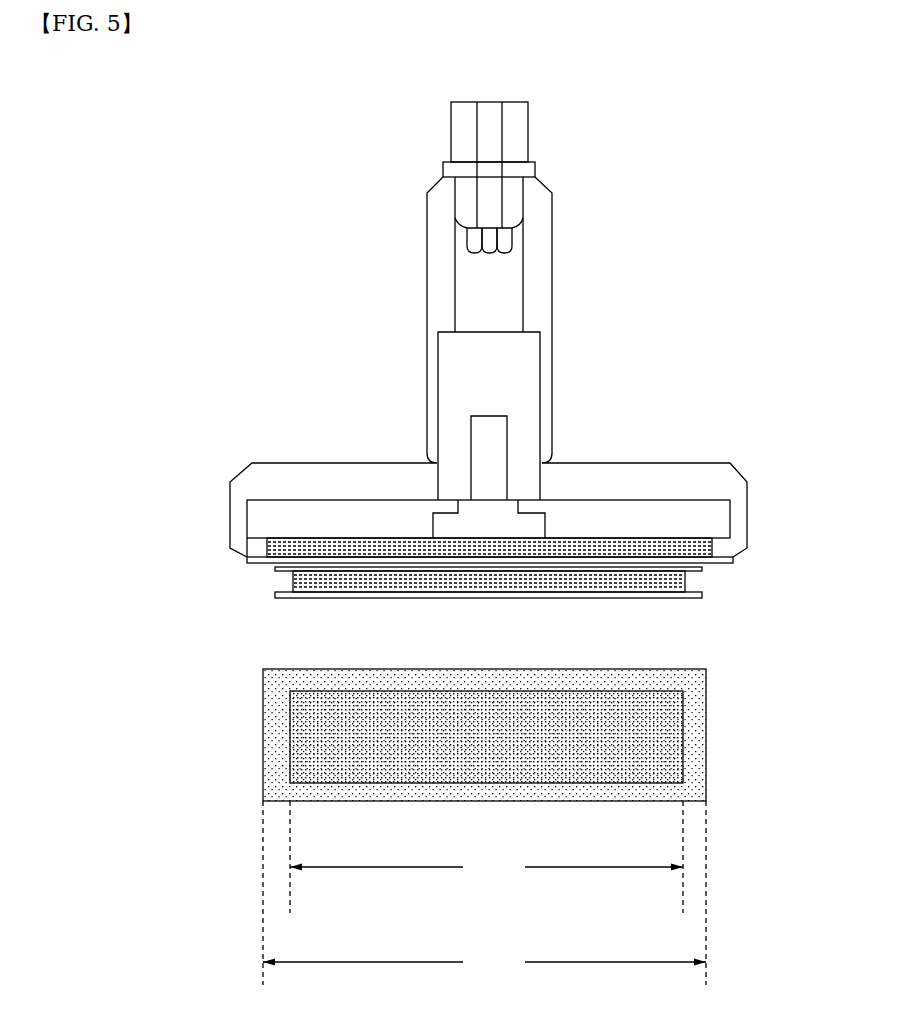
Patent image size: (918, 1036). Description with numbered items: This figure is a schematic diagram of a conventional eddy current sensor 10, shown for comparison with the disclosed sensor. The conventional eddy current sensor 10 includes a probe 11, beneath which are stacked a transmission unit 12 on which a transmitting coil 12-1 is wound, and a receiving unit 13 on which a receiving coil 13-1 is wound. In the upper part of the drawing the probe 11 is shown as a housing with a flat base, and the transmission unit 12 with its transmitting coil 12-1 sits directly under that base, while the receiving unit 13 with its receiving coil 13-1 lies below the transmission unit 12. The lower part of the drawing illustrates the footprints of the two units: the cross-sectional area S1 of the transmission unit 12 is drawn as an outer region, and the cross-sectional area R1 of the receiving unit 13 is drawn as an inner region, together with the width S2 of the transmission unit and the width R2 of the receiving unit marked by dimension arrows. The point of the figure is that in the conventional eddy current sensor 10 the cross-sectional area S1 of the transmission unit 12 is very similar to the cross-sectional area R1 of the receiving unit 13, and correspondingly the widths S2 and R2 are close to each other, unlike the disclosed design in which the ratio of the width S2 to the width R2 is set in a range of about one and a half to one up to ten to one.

The conventional eddy current sensor 10 is at (157, 161).
The probe 11 is at (248, 518).
The transmission unit 12 is at (501, 551).
The transmitting coil 12-1 is at (266, 552).
The receiving unit 13 is at (480, 587).
The receiving coil 13-1 is at (293, 587).
The cross-sectional area of the receiving unit R1 is at (486, 737).
The width of the receiving unit R2 is at (486, 869).
The cross-sectional area of the transmission unit S1 is at (698, 737).
The width of the transmission unit S2 is at (484, 965).